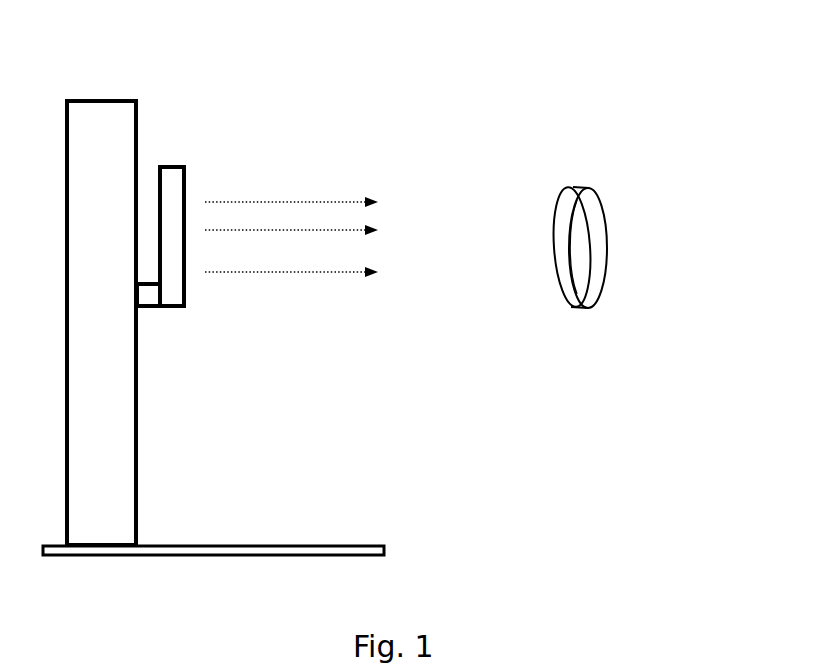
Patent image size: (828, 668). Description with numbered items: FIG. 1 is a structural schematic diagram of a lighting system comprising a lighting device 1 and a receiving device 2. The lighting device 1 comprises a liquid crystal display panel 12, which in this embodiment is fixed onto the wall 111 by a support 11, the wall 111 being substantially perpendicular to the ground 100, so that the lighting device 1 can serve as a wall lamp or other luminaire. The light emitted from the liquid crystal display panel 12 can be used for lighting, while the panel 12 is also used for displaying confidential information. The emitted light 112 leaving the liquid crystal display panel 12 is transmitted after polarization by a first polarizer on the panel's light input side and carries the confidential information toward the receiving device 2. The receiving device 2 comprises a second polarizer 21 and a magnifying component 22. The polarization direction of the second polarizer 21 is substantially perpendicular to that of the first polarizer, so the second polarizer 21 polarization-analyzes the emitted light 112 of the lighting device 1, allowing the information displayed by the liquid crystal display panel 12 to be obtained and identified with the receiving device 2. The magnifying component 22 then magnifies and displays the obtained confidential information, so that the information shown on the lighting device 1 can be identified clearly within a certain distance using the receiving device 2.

The lighting device 1 is at (286, 68).
The ground 100 is at (220, 545).
The wall 111 is at (108, 100).
The support 11 is at (148, 300).
The liquid crystal display panel 12 is at (188, 185).
The emitted light 112 is at (291, 219).
The receiving device 2 is at (652, 224).
The second polarizer 21 is at (558, 287).
The magnifying component 22 is at (572, 208).